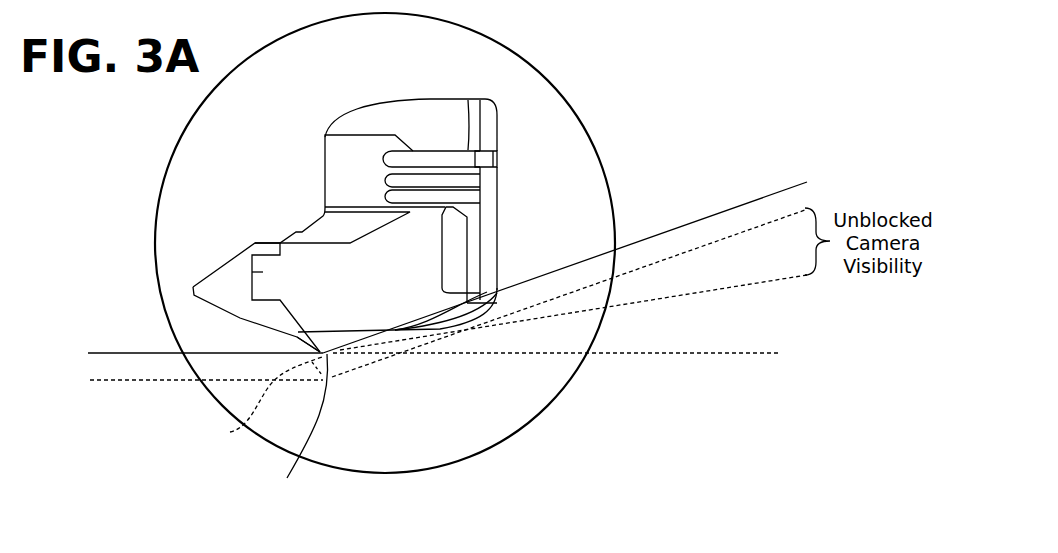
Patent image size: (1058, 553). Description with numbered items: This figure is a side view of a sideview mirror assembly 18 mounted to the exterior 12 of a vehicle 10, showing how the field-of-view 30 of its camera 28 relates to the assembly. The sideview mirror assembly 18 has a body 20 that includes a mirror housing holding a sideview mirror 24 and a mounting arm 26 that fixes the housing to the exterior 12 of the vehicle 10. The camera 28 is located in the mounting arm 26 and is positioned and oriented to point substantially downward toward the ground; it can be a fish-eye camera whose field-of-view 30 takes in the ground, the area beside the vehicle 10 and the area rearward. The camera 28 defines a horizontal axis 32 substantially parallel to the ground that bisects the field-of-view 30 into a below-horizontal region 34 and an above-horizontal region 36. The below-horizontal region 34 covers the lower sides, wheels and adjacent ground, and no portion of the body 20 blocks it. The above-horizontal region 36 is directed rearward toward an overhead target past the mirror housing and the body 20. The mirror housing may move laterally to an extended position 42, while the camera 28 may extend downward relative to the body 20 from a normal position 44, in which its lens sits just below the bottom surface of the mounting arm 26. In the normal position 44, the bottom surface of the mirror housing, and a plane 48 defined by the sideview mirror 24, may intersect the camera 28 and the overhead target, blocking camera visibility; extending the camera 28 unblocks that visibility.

The vehicle 10 is at (530, 63).
The exterior 12 is at (392, 64).
The sideview mirror assembly 18 is at (325, 143).
The body 20 is at (325, 185).
The sideview mirror 24 is at (498, 184).
The mounting arm 26 is at (258, 272).
The camera 28 is at (301, 431).
The field-of-view 30 is at (120, 352).
The horizontal axis 32 is at (625, 357).
The below-horizontal region 34 is at (342, 387).
The above-horizontal region 36 is at (573, 312).
The extended position 42 is at (300, 338).
The normal position 44 is at (257, 402).
The plane 48 is at (497, 233).